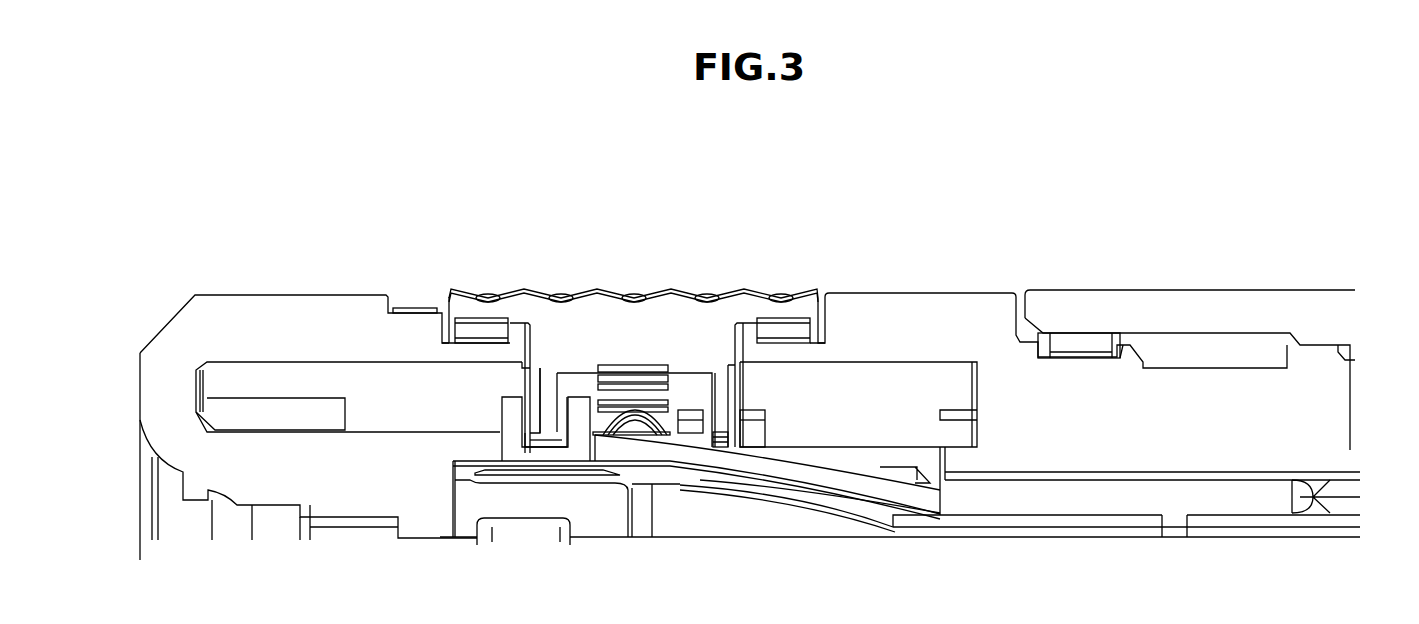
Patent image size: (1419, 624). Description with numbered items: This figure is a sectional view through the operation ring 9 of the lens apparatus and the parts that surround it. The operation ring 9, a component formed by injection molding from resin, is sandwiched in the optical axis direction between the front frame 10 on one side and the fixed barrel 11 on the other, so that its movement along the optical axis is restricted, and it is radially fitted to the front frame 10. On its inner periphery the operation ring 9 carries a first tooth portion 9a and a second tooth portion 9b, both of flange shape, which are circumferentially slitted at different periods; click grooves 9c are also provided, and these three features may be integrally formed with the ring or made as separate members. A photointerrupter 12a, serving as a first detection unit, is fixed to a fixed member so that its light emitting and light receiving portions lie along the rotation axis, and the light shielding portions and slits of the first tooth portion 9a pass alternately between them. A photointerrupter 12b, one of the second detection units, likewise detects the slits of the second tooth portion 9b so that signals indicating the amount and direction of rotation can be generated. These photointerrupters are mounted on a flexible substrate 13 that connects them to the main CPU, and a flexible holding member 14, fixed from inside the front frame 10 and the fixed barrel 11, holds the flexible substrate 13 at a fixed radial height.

The operation ring 9 is at (864, 302).
The first tooth portion 9a is at (547, 410).
The second tooth portion 9b is at (727, 326).
The click grooves 9c is at (633, 363).
The front frame 10 is at (275, 338).
The fixed barrel 11 is at (1110, 398).
The photointerrupter 12a is at (512, 422).
The photointerrupter 12b is at (753, 435).
The flexible substrate 13 is at (545, 470).
The flexible holding member 14 is at (598, 500).